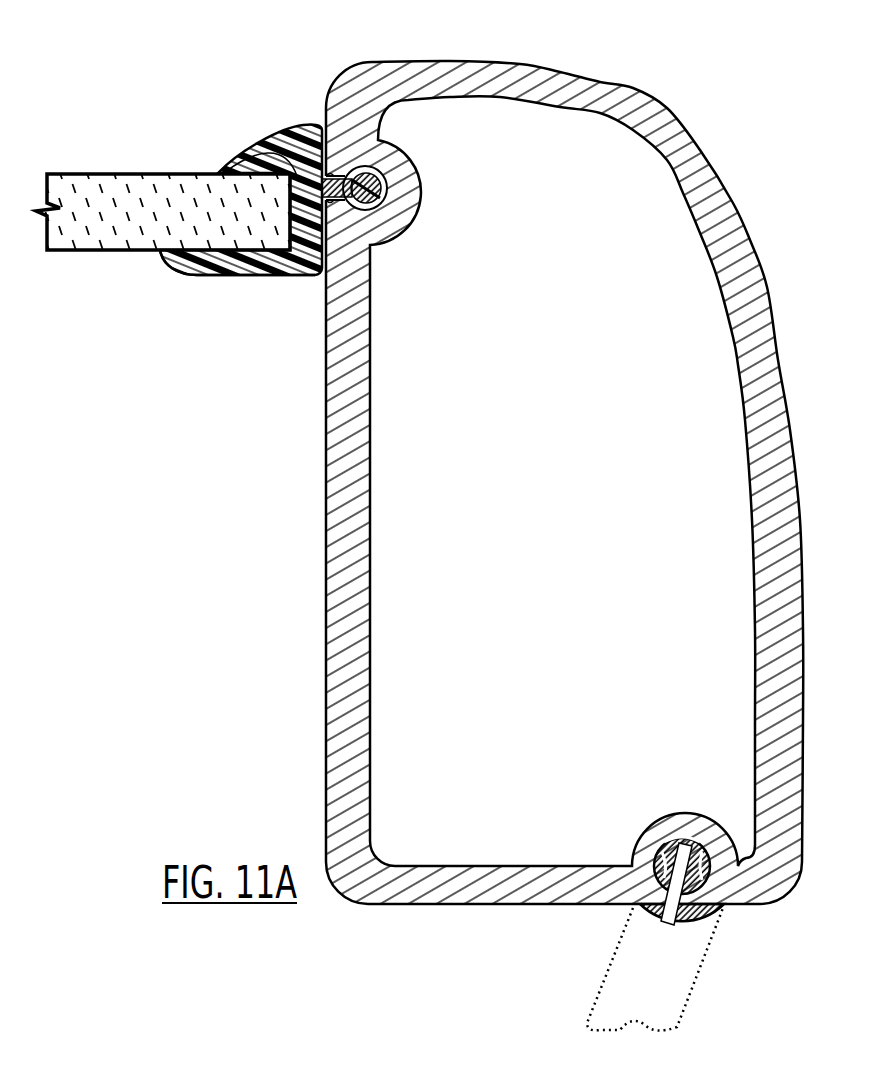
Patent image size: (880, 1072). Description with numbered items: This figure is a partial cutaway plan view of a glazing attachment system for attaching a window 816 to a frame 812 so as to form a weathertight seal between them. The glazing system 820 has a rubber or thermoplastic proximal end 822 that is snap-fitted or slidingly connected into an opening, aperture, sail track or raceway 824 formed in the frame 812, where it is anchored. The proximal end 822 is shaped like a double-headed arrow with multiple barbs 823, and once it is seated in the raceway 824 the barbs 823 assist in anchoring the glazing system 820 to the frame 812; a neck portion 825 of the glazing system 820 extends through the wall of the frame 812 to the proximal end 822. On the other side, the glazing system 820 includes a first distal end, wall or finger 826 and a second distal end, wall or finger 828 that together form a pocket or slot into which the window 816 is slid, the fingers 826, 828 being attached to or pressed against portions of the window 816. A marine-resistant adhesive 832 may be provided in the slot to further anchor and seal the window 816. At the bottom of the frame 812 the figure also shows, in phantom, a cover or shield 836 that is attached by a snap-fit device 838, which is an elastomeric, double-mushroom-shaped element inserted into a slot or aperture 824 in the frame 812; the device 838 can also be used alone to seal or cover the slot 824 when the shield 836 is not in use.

The frame 812 is at (541, 76).
The window 816 is at (154, 180).
The glazing system 820 is at (218, 174).
The proximal end 822 is at (386, 192).
The barbs 823 is at (353, 216).
The raceway 824 is at (357, 160).
The neck 825 is at (343, 216).
The first finger 826 is at (270, 138).
The second finger 828 is at (190, 276).
The marine-resistant adhesive 832 is at (157, 252).
The shield 836 is at (703, 973).
The snap-fit device 838 is at (758, 924).